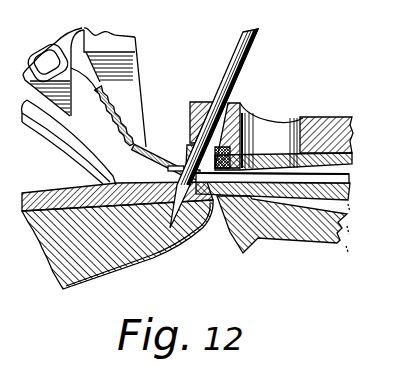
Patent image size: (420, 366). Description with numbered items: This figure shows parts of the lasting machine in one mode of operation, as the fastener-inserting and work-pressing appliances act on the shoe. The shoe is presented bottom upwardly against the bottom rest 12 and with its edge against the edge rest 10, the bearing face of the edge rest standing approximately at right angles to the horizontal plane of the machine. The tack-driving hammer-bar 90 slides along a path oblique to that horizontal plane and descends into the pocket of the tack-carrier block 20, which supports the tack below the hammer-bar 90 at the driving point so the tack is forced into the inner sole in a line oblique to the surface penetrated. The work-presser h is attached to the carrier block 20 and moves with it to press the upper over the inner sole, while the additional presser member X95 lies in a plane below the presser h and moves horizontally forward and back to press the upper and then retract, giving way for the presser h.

The edge rest 10 is at (313, 255).
The bottom rest 12 is at (72, 148).
The tack-carrier block 20 is at (277, 117).
The tack-driving hammer-bar 90 is at (241, 78).
The work-presser h is at (357, 157).
The additional presser member X95 is at (355, 178).